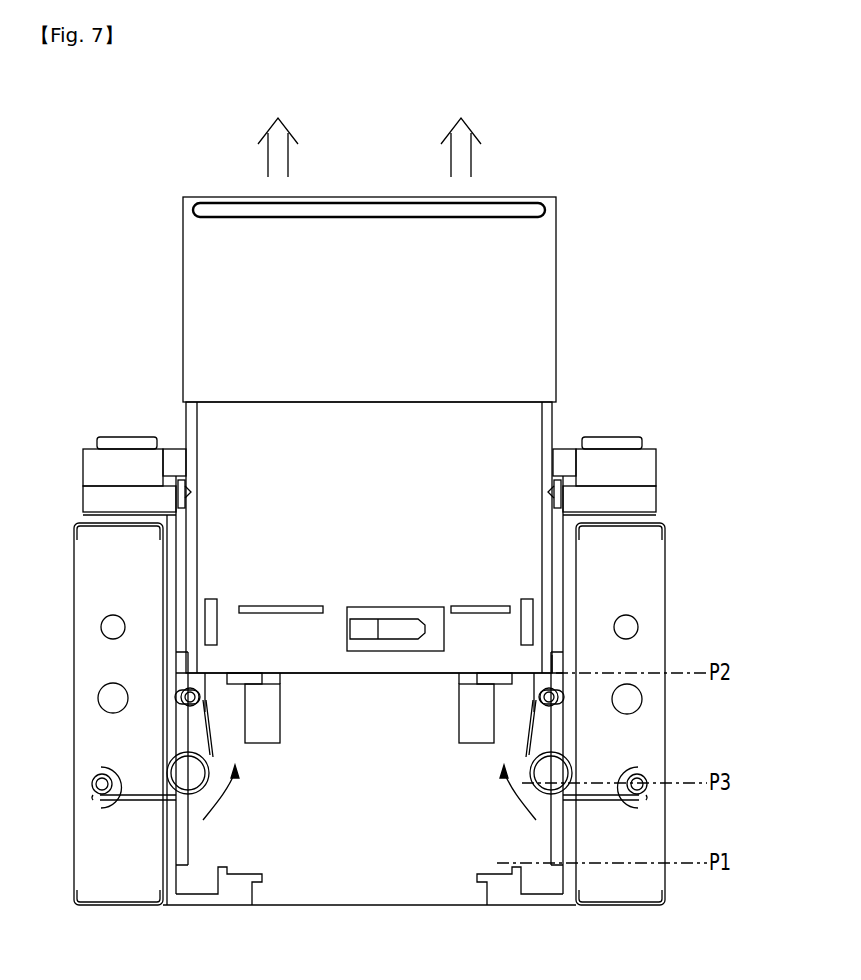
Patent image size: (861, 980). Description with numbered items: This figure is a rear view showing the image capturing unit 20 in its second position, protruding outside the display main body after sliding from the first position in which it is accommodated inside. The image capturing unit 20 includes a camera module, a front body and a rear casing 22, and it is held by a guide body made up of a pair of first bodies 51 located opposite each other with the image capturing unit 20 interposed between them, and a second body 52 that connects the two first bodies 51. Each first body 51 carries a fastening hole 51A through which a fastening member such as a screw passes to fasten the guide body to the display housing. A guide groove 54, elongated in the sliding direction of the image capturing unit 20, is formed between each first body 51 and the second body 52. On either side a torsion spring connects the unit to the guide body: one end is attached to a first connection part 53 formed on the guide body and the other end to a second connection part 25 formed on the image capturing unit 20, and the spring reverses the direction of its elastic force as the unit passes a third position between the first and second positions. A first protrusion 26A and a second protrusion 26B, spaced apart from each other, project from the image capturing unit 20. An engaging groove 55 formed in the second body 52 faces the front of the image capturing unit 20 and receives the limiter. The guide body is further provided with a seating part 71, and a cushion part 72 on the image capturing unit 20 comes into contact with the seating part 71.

The image capturing unit 20 is at (529, 180).
The rear casing 22 is at (480, 437).
The second connection part 25 is at (176, 695).
The first protrusion 26A is at (552, 663).
The second protrusion 26B is at (562, 492).
The first body 51 is at (84, 566).
The fastening hole 51A is at (98, 698).
The second body 52 is at (357, 890).
The first connection part 53 is at (93, 781).
The guide groove 54 is at (182, 838).
The engaging groove 55 is at (258, 742).
The seating part 71 is at (483, 882).
The cushion part 72 is at (484, 688).